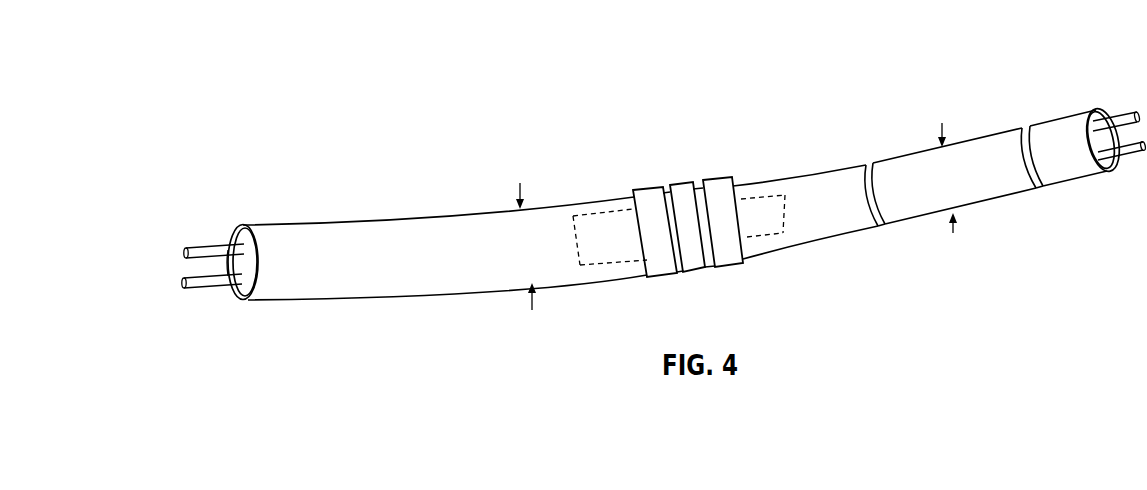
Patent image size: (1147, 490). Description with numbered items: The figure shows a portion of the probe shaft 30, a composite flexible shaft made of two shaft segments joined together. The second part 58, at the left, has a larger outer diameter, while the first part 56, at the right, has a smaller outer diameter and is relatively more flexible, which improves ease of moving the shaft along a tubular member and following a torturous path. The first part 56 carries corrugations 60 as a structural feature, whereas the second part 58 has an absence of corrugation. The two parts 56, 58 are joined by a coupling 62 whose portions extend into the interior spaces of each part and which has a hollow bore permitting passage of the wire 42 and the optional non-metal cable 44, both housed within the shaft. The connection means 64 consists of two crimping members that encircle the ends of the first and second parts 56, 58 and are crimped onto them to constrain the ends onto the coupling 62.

The probe shaft 30 is at (252, 79).
The wire 42 is at (194, 251).
The non-metal cable 44 is at (216, 286).
The first part 56 is at (982, 135).
The second part 58 is at (337, 221).
The corrugations 60 is at (868, 166).
The coupling 62 is at (684, 158).
The connection means 64 is at (649, 195).